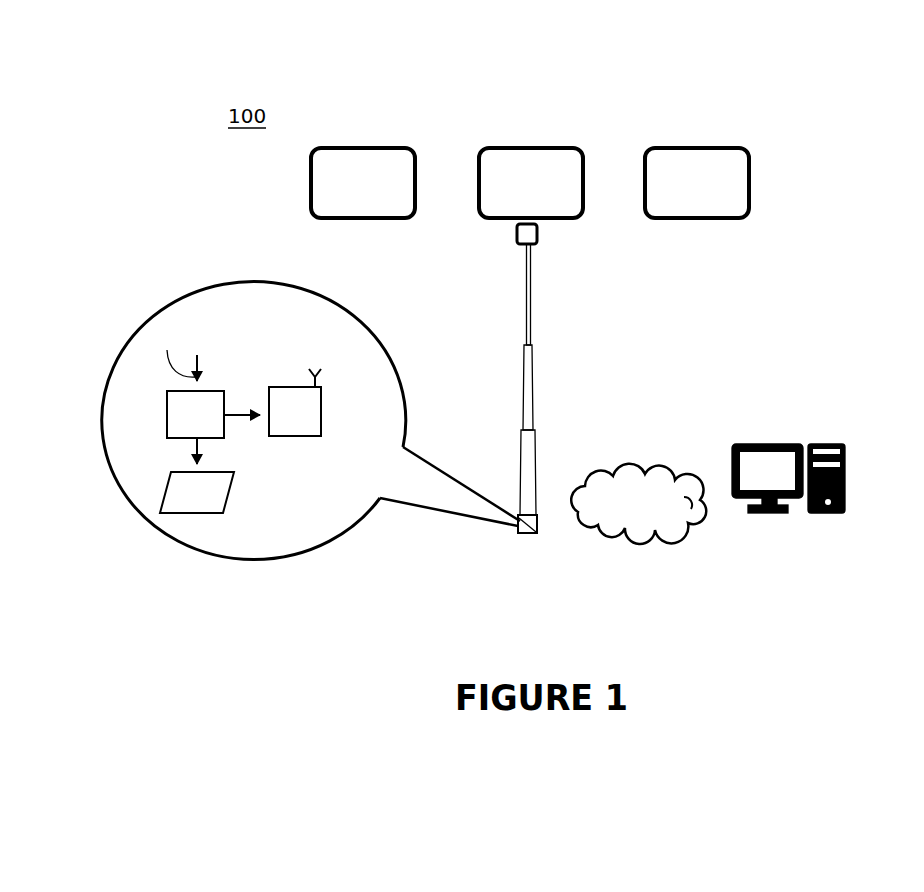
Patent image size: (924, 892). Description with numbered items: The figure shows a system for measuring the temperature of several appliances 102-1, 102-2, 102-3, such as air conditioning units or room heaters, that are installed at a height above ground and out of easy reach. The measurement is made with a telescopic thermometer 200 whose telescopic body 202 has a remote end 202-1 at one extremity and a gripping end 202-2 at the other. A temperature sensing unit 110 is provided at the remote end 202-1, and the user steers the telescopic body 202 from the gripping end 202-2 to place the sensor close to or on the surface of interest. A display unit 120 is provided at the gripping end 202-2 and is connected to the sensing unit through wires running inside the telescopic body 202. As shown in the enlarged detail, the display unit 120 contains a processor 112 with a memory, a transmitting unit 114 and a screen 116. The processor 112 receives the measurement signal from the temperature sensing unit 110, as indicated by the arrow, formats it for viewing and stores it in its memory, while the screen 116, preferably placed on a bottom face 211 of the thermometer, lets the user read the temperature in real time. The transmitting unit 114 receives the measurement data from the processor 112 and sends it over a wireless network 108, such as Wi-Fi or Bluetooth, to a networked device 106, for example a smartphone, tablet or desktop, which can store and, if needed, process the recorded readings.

The appliance 102-1 is at (347, 148).
The appliance 102-2 is at (520, 150).
The appliance 102-3 is at (687, 150).
The networked device 106 is at (773, 444).
The wireless network 108 is at (658, 517).
The temperature sensing unit 110 is at (515, 236).
The processor 112 is at (217, 387).
The transmitting unit 114 is at (283, 387).
The screen 116 is at (183, 507).
The display unit 120 is at (520, 523).
The telescopic thermometer 200 is at (549, 379).
The telescopic body 202 is at (590, 379).
The remote end 202-1 is at (528, 267).
The gripping end 202-2 is at (538, 498).
The bottom face 211 is at (527, 540).